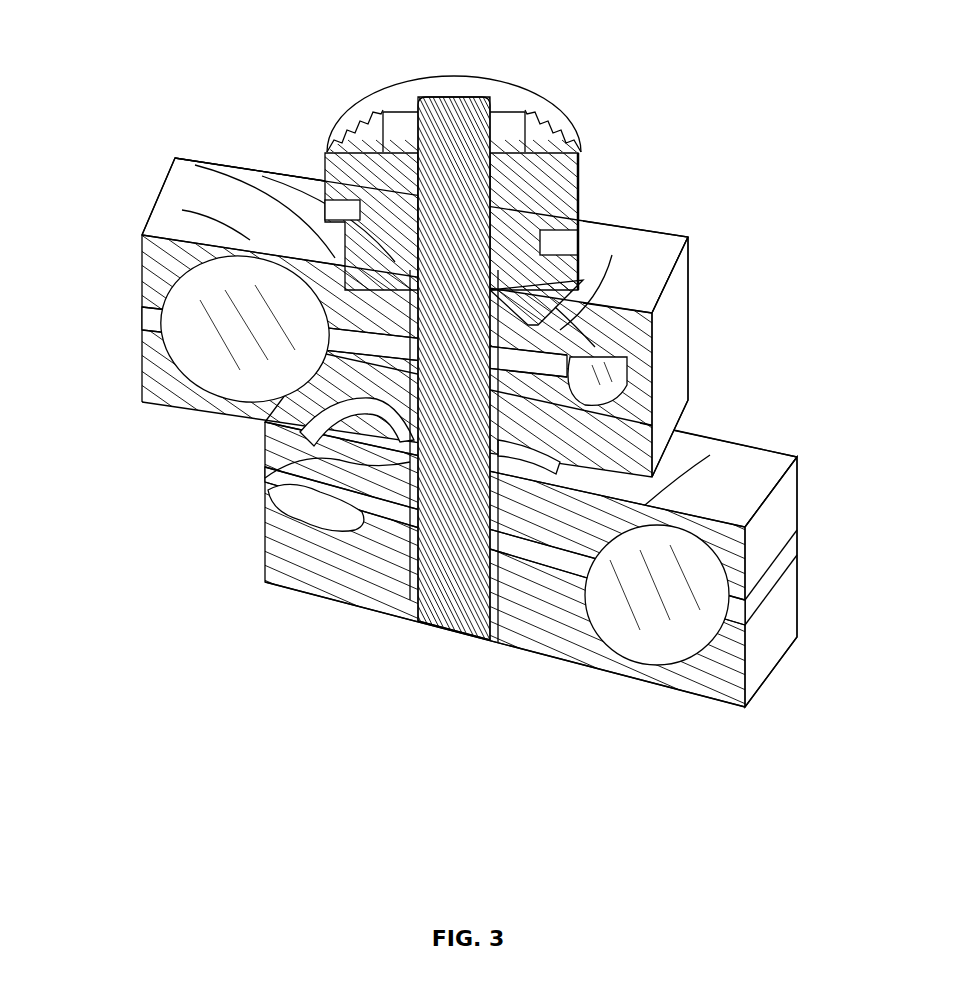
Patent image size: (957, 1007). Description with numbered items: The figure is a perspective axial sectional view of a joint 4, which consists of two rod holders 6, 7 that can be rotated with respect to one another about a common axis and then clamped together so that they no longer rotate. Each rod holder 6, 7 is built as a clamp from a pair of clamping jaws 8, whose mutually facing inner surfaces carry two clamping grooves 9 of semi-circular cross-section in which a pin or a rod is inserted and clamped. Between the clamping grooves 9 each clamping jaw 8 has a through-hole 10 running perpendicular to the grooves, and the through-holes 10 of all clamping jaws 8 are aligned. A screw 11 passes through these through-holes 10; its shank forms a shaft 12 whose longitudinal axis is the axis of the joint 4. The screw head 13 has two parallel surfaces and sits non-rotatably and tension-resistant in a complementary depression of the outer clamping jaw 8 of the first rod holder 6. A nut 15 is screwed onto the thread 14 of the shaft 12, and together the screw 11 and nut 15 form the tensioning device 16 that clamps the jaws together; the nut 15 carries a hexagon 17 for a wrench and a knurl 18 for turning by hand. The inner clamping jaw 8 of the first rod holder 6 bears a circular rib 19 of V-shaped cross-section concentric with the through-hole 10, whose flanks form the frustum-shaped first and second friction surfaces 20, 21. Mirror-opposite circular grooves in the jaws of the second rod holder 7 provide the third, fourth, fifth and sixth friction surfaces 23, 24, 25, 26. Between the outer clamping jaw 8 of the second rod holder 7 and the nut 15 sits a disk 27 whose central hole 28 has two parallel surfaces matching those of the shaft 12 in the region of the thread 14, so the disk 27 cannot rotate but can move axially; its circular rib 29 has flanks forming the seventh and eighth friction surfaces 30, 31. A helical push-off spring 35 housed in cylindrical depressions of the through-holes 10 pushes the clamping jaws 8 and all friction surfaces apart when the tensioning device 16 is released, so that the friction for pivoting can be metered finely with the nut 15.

The joint 4 is at (364, 664).
The first rod holder 6 is at (814, 611).
The second rod holder 7 is at (122, 267).
The clamping jaw 8 is at (140, 283).
The clamping groove 9 is at (205, 398).
The through-hole 10 is at (421, 603).
The screw 11 is at (480, 393).
The shaft 12 is at (532, 560).
The screw head 13 is at (454, 370).
The thread 14 is at (580, 152).
The nut 15 is at (362, 113).
The tensioning device 16 is at (454, 131).
The hexagon 17 is at (560, 123).
The knurl 18 is at (585, 160).
The circular rib 19 is at (710, 455).
The first friction surface 20 is at (455, 627).
The second friction surface 21 is at (655, 435).
The third friction surface 23 is at (345, 460).
The fourth friction surface 24 is at (305, 447).
The fifth friction surface 25 is at (300, 183).
The sixth friction surface 26 is at (237, 167).
The disk 27 is at (612, 255).
The central hole 28 is at (507, 127).
The circular rib 29 is at (275, 172).
The seventh friction surface 30 is at (437, 92).
The eighth friction surface 31 is at (185, 212).
The push-off spring 35 is at (652, 313).